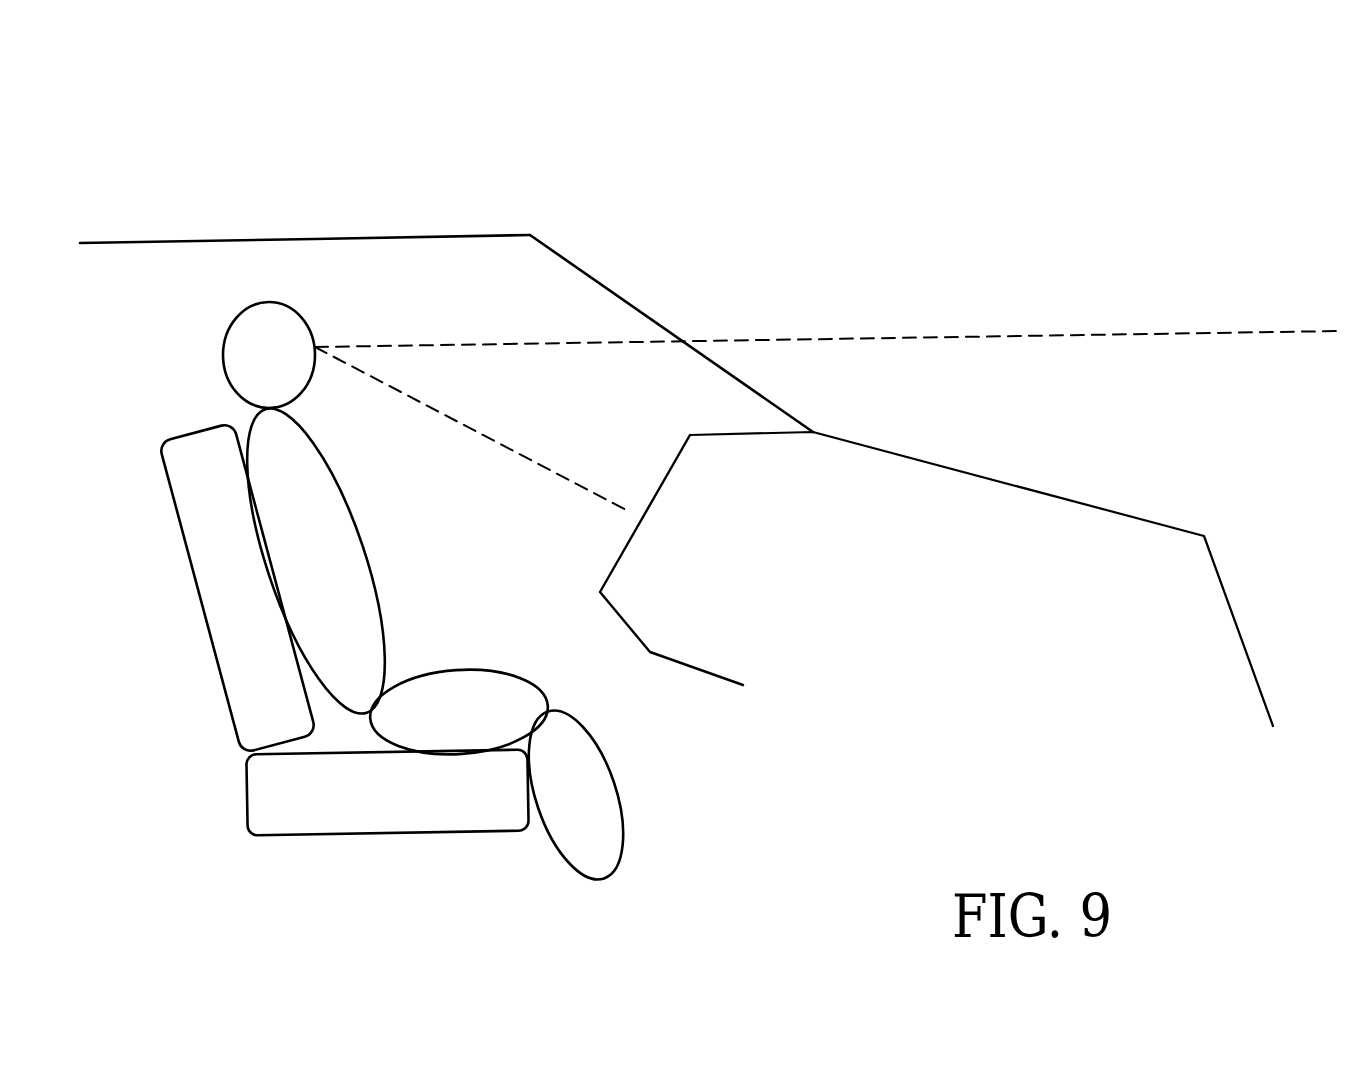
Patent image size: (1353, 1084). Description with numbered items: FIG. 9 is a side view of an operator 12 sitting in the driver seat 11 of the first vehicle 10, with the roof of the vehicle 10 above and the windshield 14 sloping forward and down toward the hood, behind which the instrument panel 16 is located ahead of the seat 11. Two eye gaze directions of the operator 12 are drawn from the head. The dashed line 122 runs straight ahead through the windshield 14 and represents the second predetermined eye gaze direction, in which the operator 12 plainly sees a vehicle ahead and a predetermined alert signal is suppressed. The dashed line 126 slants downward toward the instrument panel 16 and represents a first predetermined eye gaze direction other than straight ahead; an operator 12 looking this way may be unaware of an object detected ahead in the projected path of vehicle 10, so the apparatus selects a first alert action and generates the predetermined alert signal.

The first vehicle 10 is at (314, 237).
The driver seat 11 is at (195, 613).
The operator 12 is at (235, 317).
The windshield 14 is at (594, 277).
The instrument panel 16 is at (620, 560).
The dashed line 122 is at (890, 338).
The dashed line 126 is at (473, 423).